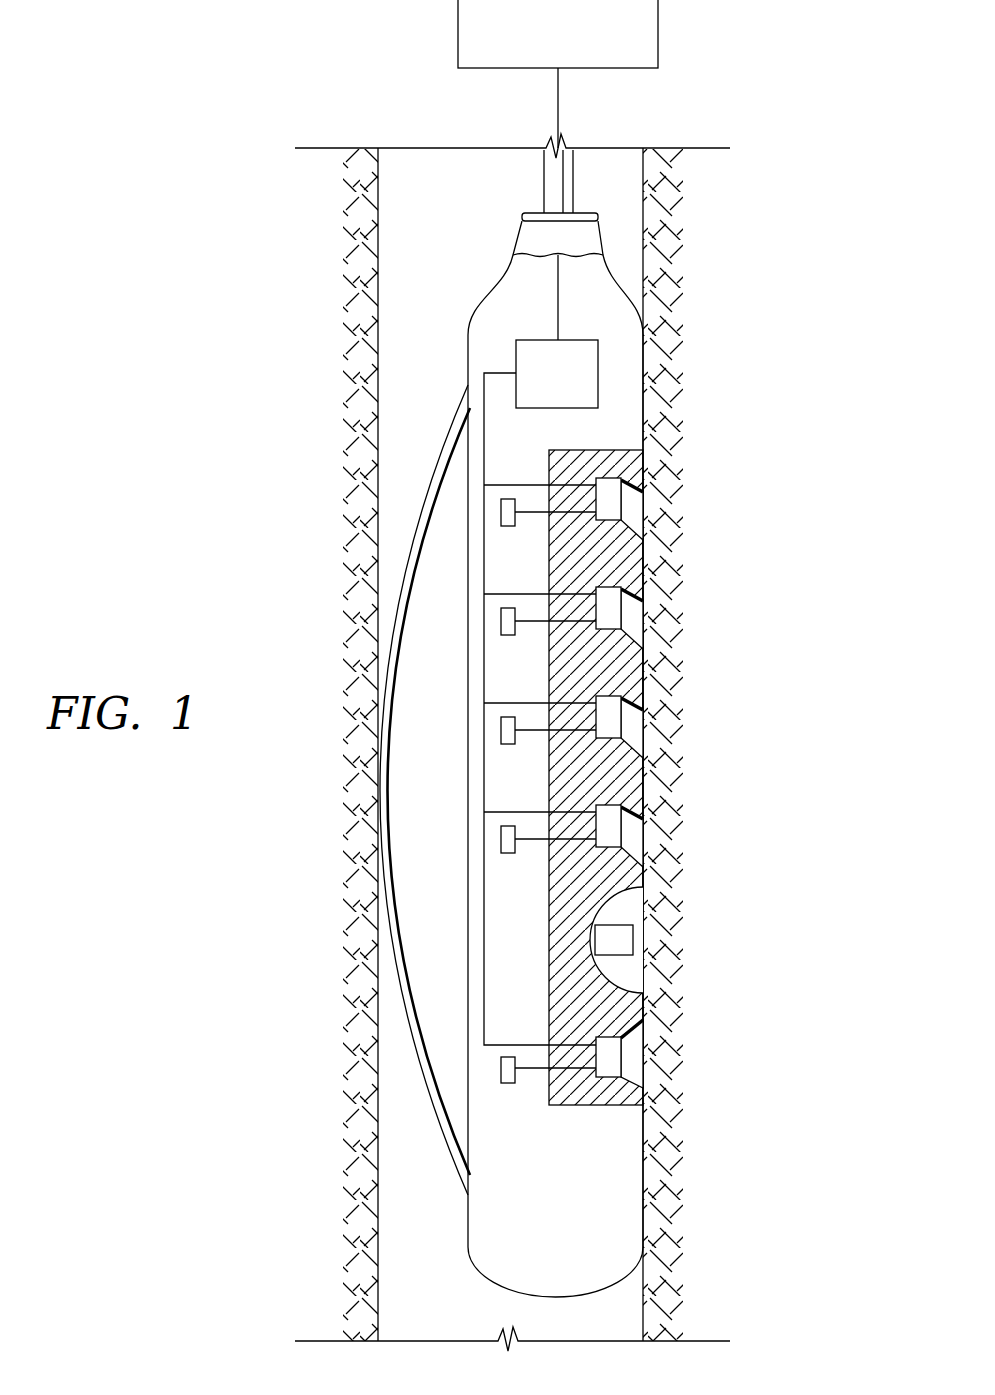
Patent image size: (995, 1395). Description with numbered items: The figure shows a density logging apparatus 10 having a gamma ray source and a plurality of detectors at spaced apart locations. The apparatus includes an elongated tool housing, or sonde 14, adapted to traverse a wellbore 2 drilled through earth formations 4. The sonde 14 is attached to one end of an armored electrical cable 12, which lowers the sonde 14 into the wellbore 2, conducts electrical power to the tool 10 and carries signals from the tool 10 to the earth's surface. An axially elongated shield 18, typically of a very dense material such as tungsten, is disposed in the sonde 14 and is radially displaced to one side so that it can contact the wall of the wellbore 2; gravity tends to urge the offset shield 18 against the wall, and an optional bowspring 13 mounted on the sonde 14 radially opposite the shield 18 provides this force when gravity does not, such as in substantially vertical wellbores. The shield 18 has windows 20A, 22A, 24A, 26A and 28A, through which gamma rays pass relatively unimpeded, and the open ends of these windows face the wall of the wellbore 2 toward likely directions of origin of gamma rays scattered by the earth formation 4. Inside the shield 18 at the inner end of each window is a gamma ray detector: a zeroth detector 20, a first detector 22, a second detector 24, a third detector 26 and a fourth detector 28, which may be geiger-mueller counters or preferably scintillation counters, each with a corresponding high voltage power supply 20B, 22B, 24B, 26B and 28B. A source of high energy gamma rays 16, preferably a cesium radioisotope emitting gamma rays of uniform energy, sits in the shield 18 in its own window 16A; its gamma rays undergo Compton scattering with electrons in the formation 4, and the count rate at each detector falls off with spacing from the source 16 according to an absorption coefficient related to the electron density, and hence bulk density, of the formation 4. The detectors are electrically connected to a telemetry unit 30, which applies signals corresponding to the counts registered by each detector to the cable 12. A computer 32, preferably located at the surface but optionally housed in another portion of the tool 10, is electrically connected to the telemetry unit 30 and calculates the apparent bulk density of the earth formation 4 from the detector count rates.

The wellbore 2 is at (638, 246).
The earth formations 4 is at (693, 305).
The density logging apparatus 10 is at (275, 381).
The armored electrical cable 12 is at (558, 93).
The bowspring 13 is at (426, 491).
The sonde 14 is at (488, 290).
The source of high energy gamma rays 16 is at (623, 942).
The window 16A is at (612, 897).
The shield 18 is at (580, 1108).
The 0th detector 20 is at (613, 1058).
The window 20A is at (636, 1040).
The high voltage power supply 20B is at (508, 1085).
The 1st detector 22 is at (613, 825).
The window 22A is at (638, 844).
The high voltage power supply 22B is at (508, 853).
The 2nd detector 24 is at (613, 716).
The window 24A is at (638, 735).
The high voltage power supply 24B is at (508, 744).
The 3rd detector 26 is at (613, 607).
The window 26A is at (638, 626).
The high voltage power supply 26B is at (508, 635).
The 4th detector 28 is at (613, 498).
The window 28A is at (638, 517).
The high voltage power supply 28B is at (508, 526).
The telemetry unit 30 is at (582, 340).
The computer 32 is at (658, 30).